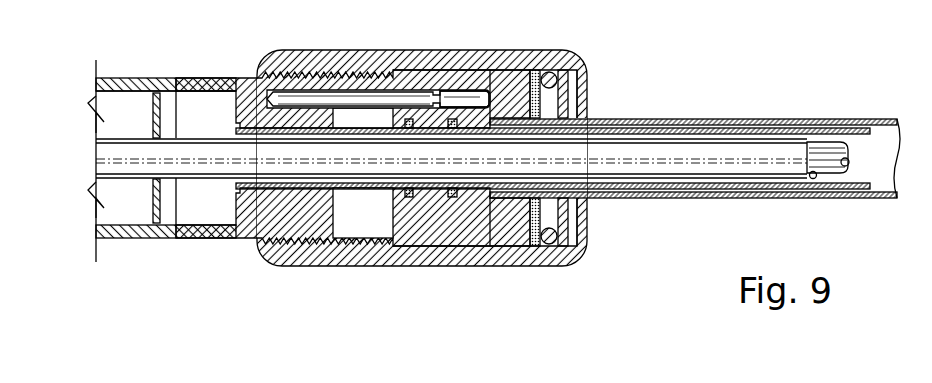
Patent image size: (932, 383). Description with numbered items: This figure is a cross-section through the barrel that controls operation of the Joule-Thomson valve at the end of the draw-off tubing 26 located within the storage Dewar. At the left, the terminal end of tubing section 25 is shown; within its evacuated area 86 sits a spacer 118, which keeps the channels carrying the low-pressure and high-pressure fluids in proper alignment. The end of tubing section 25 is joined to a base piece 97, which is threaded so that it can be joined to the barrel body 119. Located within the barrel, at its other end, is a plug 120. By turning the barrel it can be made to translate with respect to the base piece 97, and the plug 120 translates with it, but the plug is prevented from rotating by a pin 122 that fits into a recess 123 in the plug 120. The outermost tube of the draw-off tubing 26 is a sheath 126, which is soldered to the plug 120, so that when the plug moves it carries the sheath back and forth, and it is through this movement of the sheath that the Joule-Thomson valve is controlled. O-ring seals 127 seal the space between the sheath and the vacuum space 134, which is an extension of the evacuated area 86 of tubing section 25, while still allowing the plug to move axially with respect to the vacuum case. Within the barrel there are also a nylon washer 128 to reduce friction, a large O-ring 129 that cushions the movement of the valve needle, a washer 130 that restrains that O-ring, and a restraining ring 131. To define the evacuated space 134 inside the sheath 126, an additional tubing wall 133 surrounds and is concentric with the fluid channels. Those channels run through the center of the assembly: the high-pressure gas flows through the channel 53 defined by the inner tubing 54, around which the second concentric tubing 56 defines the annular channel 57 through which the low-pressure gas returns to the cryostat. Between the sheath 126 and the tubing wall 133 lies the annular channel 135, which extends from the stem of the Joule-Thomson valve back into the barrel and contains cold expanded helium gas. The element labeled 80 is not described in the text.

The spacer 118 is at (148, 113).
The tubing section 25 is at (132, 76).
The tube wall 80 is at (137, 85).
The base piece 97 is at (200, 82).
The pin 122 is at (352, 100).
The recess 123 is at (455, 100).
The plug 120 is at (513, 83).
The sheath 126 is at (612, 120).
The second concentric tubing 56 is at (698, 152).
The tubing 54 is at (830, 150).
The annular channel 135 is at (845, 127).
The channel 53 is at (851, 164).
The annular channel 57 is at (817, 178).
The tubing wall 133 is at (763, 189).
The draw-off tubing 26 is at (752, 203).
The vacuum space 134 is at (658, 186).
The washer 130 is at (567, 210).
The restraining ring 131 is at (580, 248).
The large O-ring 129 is at (560, 262).
The nylon washer 128 is at (536, 262).
The O-ring seals 127 is at (453, 198).
The barrel body 119 is at (342, 250).
The evacuated area 86 is at (133, 208).